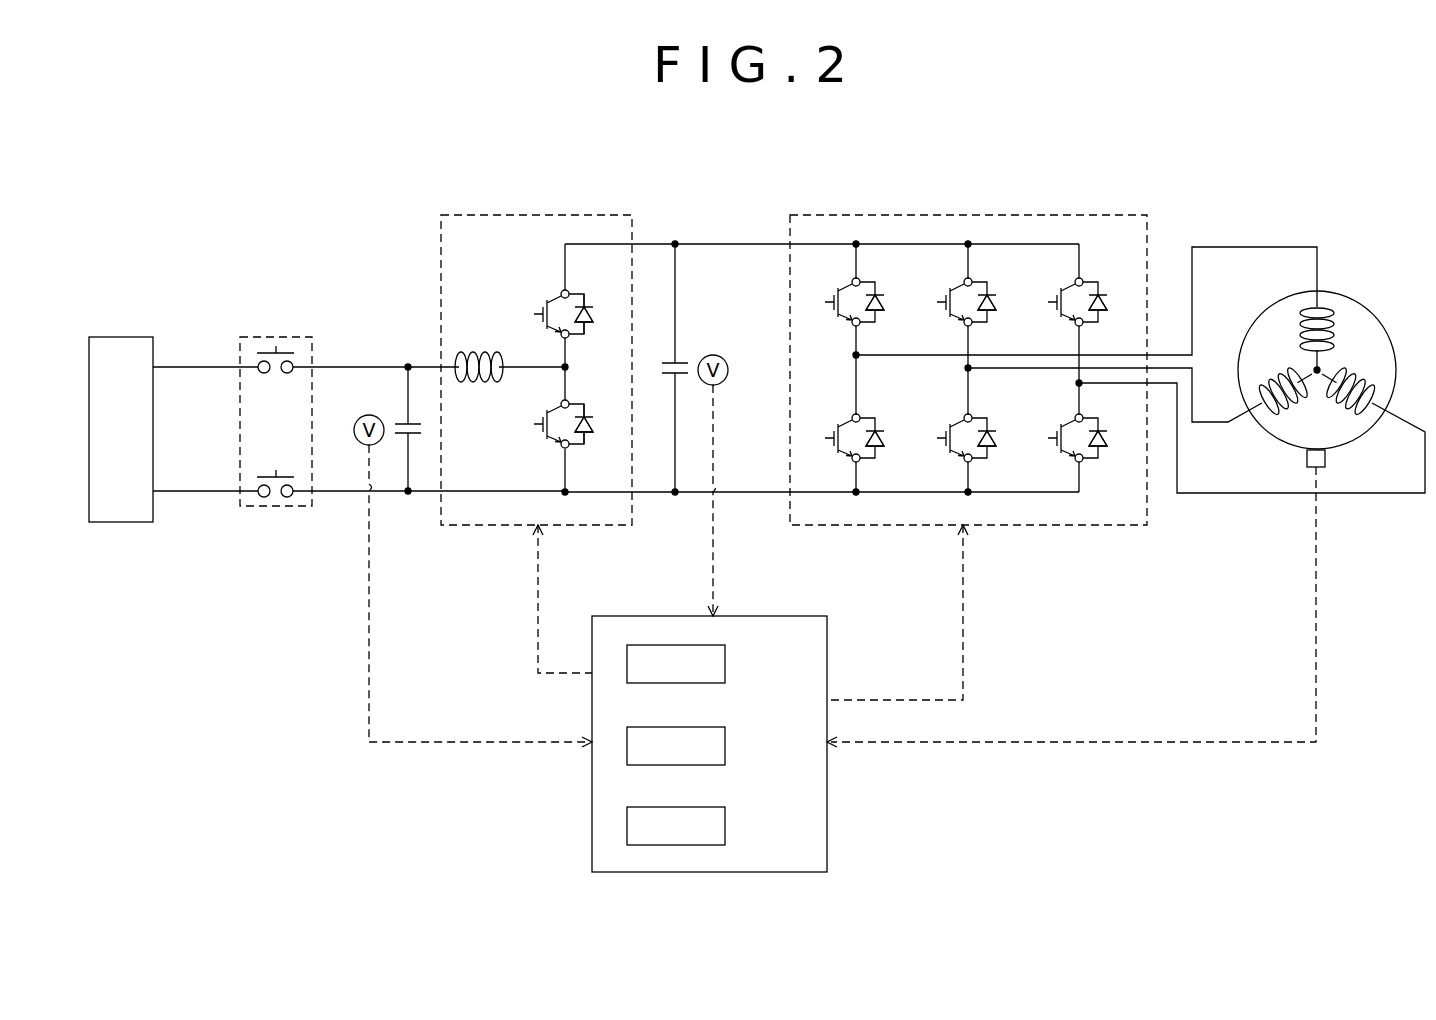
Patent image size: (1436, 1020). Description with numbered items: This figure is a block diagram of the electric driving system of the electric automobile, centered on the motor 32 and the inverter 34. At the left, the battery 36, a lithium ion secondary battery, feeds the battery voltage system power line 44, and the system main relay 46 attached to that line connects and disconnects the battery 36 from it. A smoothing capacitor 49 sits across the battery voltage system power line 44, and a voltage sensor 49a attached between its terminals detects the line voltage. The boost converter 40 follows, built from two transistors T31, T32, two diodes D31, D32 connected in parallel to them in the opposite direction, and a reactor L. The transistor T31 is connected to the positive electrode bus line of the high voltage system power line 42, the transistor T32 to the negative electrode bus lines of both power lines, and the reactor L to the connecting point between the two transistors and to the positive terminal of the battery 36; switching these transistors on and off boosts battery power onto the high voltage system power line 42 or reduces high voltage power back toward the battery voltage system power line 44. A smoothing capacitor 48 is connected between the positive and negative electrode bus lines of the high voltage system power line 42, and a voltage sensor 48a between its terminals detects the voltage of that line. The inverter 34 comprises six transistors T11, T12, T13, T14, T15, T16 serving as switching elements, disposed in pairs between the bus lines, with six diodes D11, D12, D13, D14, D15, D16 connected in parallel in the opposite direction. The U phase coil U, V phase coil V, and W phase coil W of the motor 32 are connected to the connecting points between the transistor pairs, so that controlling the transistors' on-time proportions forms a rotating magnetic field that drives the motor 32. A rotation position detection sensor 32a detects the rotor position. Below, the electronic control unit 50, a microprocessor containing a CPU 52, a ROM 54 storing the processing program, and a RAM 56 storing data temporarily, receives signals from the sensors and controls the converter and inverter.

The motor 32 is at (1140, 365).
The rotation position detection sensor 32a is at (1325, 458).
The inverter 34 is at (968, 419).
The battery 36 is at (120, 337).
The boost converter 40 is at (536, 405).
The high voltage system power line 42 is at (755, 492).
The battery voltage system power line 44 is at (205, 491).
The system main relay 46 is at (280, 337).
The smoothing capacitor 48 is at (671, 362).
The voltage sensor 48a is at (713, 355).
The smoothing capacitor 49 is at (408, 420).
The voltage sensor 49a is at (369, 415).
The electronic control unit 50 is at (709, 704).
The central processing unit 52 is at (725, 664).
The read-only memory 54 is at (725, 746).
The random access memory 56 is at (725, 826).
The reactor L is at (478, 352).
The transistor T11 is at (825, 302).
The transistor T12 is at (937, 302).
The transistor T13 is at (1048, 302).
The transistor T14 is at (825, 438).
The transistor T15 is at (937, 438).
The transistor T16 is at (1048, 438).
The transistor T31 is at (534, 314).
The transistor T32 is at (534, 424).
The diode D11 is at (884, 310).
The diode D12 is at (996, 310).
The diode D13 is at (1107, 310).
The diode D14 is at (884, 446).
The diode D15 is at (996, 446).
The diode D16 is at (1107, 446).
The diode D31 is at (592, 322).
The diode D32 is at (592, 432).
The U phase coil U is at (1312, 318).
The V phase coil V is at (1265, 387).
The W phase coil W is at (1367, 388).